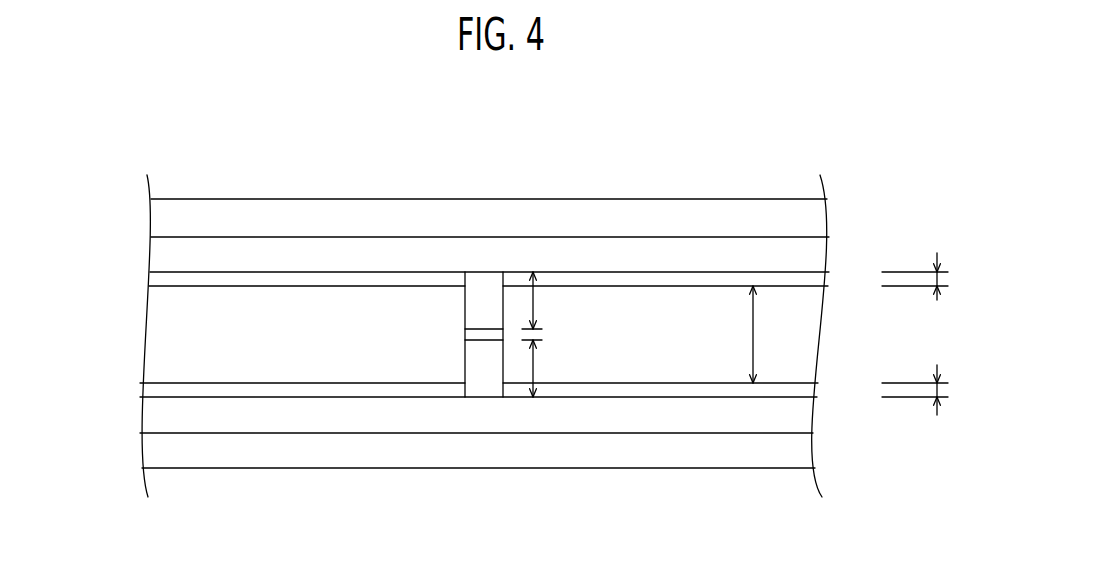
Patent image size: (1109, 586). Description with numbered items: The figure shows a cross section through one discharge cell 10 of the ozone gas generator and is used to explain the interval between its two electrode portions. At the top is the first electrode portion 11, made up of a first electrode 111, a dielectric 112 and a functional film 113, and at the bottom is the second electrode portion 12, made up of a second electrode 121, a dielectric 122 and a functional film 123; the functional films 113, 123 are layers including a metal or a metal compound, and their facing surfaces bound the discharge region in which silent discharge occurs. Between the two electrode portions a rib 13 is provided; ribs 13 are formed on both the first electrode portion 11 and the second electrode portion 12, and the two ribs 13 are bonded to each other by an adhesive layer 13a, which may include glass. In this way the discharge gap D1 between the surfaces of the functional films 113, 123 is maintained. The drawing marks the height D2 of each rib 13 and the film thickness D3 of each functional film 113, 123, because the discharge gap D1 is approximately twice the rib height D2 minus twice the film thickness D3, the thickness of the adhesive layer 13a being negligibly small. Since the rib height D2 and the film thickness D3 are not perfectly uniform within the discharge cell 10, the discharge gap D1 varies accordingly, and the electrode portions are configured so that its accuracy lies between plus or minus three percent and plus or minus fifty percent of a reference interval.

The discharge cell 10 is at (754, 165).
The first electrode portion 11 is at (873, 223).
The first electrode 111 is at (163, 222).
The dielectric 112 is at (163, 255).
The functional film 113 is at (157, 278).
The second electrode portion 12 is at (873, 433).
The second electrode 121 is at (150, 445).
The dielectric 122 is at (148, 415).
The functional film 123 is at (148, 390).
The rib 13 is at (465, 313).
The adhesive layer 13a is at (465, 338).
The discharge gap D1 is at (769, 334).
The height of the rib D2 is at (548, 334).
The film thickness D3 is at (932, 334).